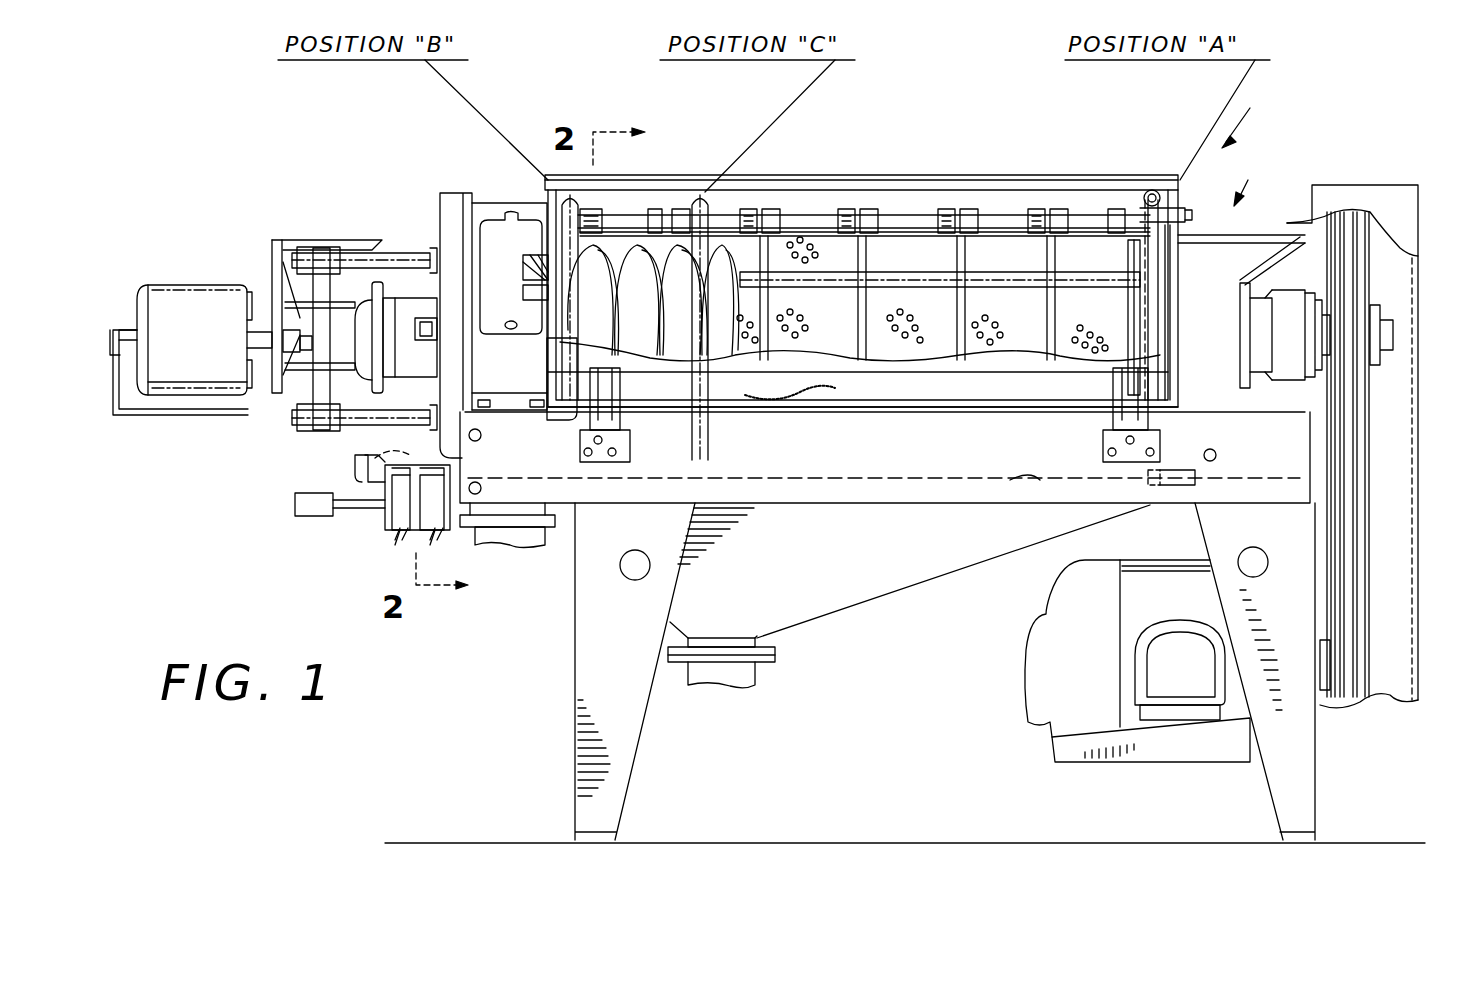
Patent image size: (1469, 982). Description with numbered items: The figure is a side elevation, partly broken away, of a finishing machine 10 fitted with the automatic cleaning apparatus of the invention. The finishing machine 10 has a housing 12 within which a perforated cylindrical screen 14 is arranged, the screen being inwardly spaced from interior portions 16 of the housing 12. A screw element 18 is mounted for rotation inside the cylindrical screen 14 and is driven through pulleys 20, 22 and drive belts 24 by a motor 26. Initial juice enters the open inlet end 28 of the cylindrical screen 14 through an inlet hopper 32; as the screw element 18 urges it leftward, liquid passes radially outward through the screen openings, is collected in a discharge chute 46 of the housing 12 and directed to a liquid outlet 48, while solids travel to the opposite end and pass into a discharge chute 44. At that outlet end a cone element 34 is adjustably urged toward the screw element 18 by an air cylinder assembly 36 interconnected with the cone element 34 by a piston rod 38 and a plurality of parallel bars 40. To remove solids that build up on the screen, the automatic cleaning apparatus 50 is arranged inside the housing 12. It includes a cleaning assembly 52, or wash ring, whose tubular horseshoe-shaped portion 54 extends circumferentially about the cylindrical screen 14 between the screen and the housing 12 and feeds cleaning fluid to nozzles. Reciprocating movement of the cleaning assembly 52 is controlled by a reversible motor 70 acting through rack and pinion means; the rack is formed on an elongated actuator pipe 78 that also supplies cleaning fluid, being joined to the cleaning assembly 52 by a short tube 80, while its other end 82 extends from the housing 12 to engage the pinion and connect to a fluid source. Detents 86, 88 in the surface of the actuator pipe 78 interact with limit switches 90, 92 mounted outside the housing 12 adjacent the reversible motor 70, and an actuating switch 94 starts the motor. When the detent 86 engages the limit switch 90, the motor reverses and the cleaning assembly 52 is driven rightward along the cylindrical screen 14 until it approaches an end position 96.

The finishing machine 10 is at (1254, 100).
The housing 12 is at (912, 175).
The cylindrical screen 14 is at (613, 247).
The interior portions 16 is at (830, 192).
The screw element 18 is at (684, 345).
The pulley 20 is at (1388, 337).
The pulley 22 is at (1365, 680).
The drive belts 24 is at (1366, 527).
The motor 26 is at (1188, 690).
The inlet end 28 is at (1130, 307).
The inlet hopper 32 is at (1250, 245).
The cone element 34 is at (545, 272).
The air cylinder assembly 36 is at (195, 280).
The piston rod 38 is at (295, 390).
The parallel bars 40 is at (402, 255).
The discharge chute 44 is at (545, 540).
The discharge chute 46 is at (930, 582).
The liquid outlet 48 is at (740, 670).
The automatic cleaning apparatus 50 is at (1160, 333).
The cleaning assembly 52 is at (1143, 203).
The tubular horseshoe-shaped portion 54 is at (1172, 255).
The reversible motor 70 is at (378, 512).
The actuator pipe 78 is at (845, 470).
The short tube 80 is at (1189, 484).
The end of pipe 82 is at (355, 470).
The detent 86 is at (1024, 474).
The detent 88 is at (375, 455).
The limit switch 90 is at (440, 525).
The limit switch 92 is at (400, 530).
The actuating switch 94 is at (295, 506).
The end position 96 is at (1153, 192).